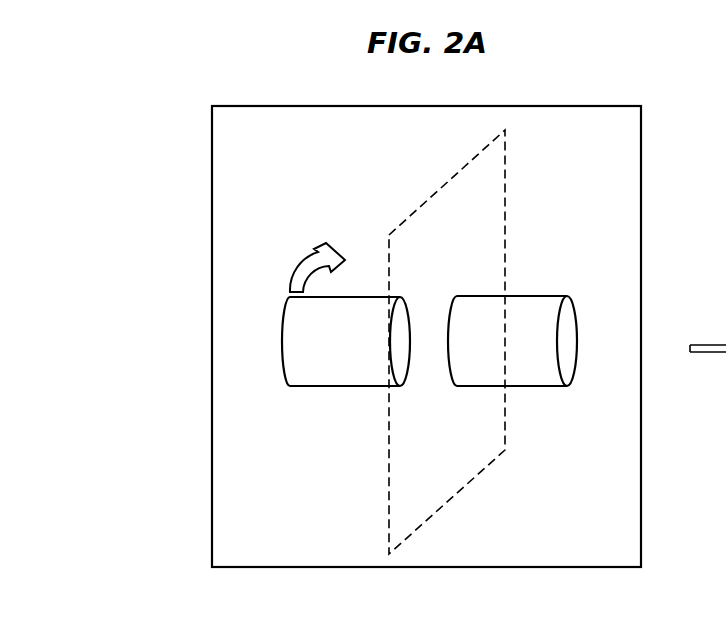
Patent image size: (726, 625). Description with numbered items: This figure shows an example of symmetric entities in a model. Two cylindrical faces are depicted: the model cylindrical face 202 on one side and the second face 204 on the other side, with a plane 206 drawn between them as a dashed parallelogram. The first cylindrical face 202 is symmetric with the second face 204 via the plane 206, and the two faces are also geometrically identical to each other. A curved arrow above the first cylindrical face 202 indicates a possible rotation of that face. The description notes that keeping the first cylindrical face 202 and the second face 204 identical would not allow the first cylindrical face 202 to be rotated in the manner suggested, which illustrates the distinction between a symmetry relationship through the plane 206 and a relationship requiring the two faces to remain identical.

The model cylindrical face c1 202 is at (278, 342).
The face c2 204 is at (585, 327).
The plane P1 206 is at (411, 210).